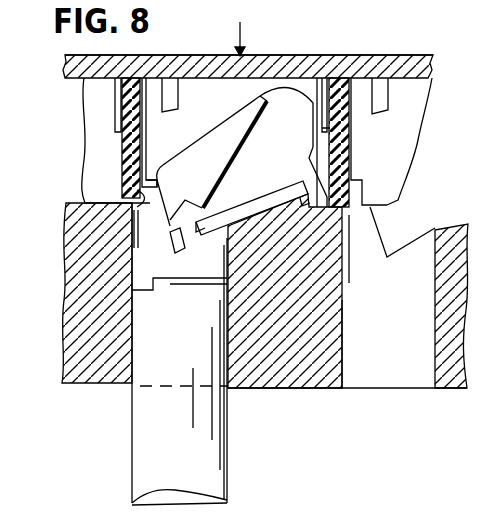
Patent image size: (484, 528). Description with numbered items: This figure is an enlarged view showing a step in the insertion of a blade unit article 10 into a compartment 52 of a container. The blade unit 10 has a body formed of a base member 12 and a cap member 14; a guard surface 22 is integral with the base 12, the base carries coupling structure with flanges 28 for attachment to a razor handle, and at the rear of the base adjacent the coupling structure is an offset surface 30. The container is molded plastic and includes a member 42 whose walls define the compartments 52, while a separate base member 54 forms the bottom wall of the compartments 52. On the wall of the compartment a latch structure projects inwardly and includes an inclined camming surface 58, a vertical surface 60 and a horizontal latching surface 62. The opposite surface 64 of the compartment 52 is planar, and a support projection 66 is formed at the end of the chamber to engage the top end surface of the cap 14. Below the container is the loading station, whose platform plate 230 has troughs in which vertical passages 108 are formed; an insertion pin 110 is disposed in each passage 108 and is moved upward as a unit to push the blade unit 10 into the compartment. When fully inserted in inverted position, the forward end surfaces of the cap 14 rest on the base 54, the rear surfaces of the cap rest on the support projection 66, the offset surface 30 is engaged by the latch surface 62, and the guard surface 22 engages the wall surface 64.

The blade unit article 10 is at (274, 155).
The base member 12 is at (242, 155).
The cap member 14 is at (231, 118).
The guard surface 22 is at (317, 78).
The flanges 28 is at (305, 208).
The offset surface 30 is at (172, 242).
The member 42 is at (400, 170).
The compartments 52 is at (188, 92).
The base member 54 is at (355, 57).
The inclined camming surface 58 is at (130, 218).
The vertical surface 60 is at (157, 182).
The horizontal latching surface 62 is at (149, 175).
The opposite surface 64 is at (325, 113).
The support projection 66 is at (175, 112).
The vertical passages 108 is at (132, 365).
The insertion pin 110 is at (228, 410).
The platform plate 230 is at (441, 390).